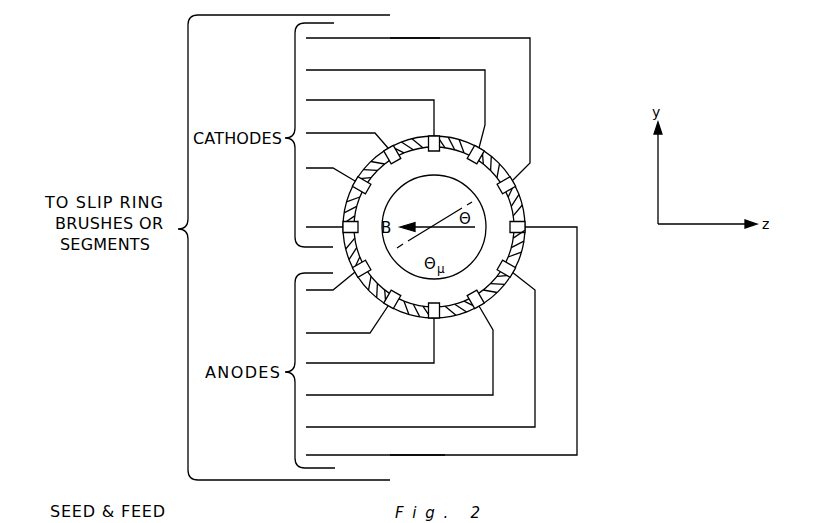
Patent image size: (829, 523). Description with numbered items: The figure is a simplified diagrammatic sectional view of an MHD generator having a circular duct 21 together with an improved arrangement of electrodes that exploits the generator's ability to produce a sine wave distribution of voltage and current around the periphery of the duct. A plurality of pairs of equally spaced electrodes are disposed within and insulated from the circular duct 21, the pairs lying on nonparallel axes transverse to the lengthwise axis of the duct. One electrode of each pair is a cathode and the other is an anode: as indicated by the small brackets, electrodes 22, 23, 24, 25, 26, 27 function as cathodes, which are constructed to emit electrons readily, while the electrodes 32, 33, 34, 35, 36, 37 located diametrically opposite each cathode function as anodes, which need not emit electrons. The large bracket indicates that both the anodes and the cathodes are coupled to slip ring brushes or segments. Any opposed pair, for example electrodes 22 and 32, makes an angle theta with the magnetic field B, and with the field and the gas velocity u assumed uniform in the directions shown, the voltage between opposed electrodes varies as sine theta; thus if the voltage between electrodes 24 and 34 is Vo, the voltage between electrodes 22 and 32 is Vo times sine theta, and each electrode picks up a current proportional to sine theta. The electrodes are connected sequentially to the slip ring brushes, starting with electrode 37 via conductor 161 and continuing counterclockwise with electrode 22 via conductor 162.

The circular duct 21 is at (518, 200).
The electrode (cathode) 22 is at (418, 127).
The electrode (cathode) 23 is at (474, 162).
The electrode (cathode) 24 is at (375, 136).
The electrode (cathode) 25 is at (356, 158).
The electrode (cathode) 26 is at (362, 180).
The electrode (cathode) 27 is at (342, 218).
The electrode (anode) 32 is at (343, 266).
The electrode (anode) 33 is at (355, 302).
The electrode (anode) 34 is at (373, 323).
The electrode (anode) 35 is at (399, 338).
The electrode (anode) 36 is at (420, 337).
The electrode (anode) 37 is at (506, 242).
The conductor 161 is at (451, 455).
The conductor 162 is at (442, 38).